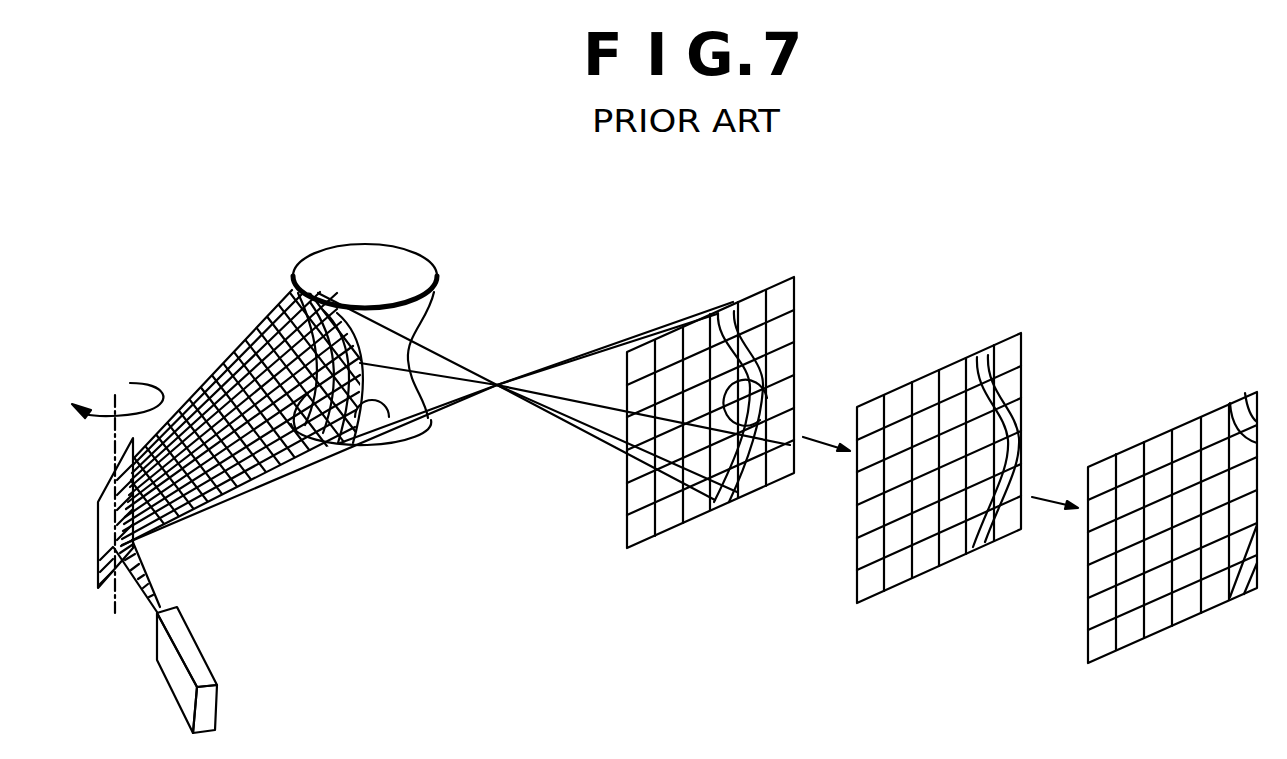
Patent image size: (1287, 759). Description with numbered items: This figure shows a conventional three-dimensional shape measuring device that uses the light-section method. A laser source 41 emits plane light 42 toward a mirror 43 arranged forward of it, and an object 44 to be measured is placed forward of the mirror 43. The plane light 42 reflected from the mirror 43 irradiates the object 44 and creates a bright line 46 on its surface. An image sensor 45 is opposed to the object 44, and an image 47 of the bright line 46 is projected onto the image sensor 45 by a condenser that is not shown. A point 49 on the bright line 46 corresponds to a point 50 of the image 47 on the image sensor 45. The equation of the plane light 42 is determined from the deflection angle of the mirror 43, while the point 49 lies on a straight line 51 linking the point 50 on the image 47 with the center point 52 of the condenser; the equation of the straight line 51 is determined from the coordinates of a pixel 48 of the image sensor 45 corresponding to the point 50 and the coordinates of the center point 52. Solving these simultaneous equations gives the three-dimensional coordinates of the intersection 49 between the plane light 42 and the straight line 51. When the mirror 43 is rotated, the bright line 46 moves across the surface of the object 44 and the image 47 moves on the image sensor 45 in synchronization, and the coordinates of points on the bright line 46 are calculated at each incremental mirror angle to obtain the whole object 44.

The laser source 41 is at (218, 703).
The plane light 42 is at (223, 490).
The mirror 43 is at (97, 568).
The object 44 is at (413, 272).
The image sensor 45 is at (942, 450).
The bright line 46 is at (390, 410).
The image 47 is at (778, 338).
The pixel 48 is at (775, 467).
The point 49 is at (400, 337).
The point 50 is at (767, 397).
The straight line 51 is at (580, 403).
The center point 52 is at (497, 392).